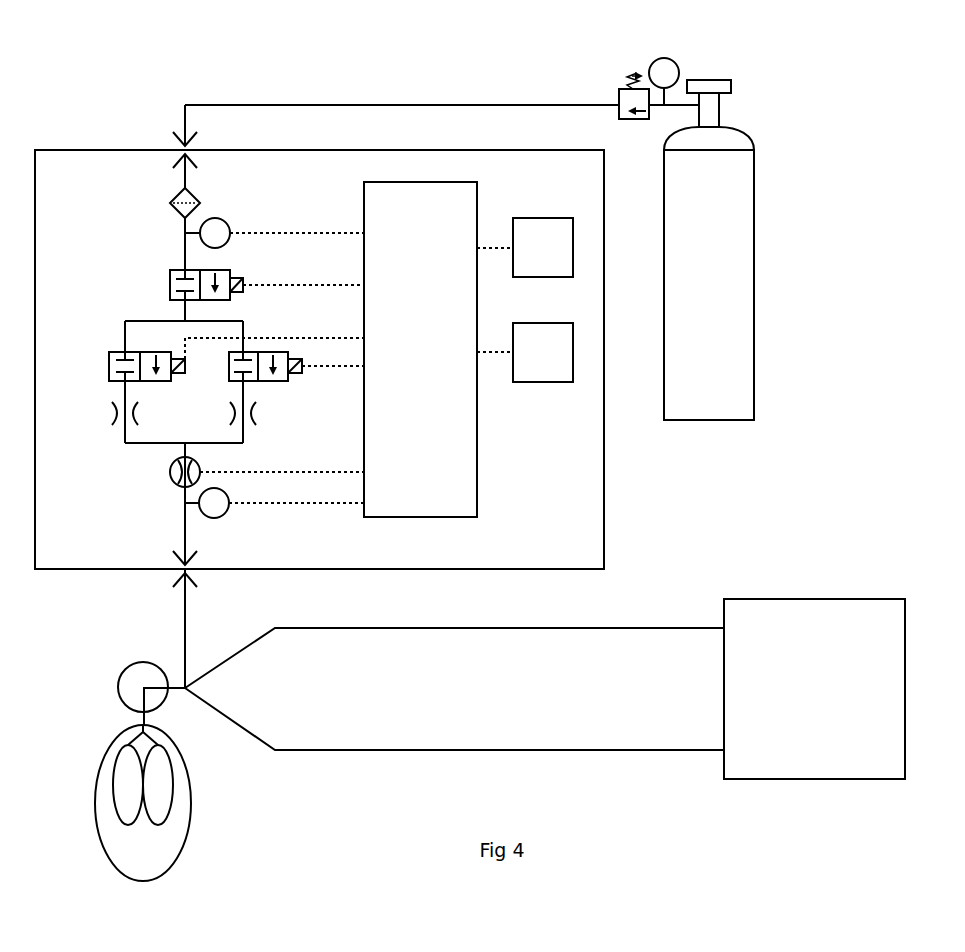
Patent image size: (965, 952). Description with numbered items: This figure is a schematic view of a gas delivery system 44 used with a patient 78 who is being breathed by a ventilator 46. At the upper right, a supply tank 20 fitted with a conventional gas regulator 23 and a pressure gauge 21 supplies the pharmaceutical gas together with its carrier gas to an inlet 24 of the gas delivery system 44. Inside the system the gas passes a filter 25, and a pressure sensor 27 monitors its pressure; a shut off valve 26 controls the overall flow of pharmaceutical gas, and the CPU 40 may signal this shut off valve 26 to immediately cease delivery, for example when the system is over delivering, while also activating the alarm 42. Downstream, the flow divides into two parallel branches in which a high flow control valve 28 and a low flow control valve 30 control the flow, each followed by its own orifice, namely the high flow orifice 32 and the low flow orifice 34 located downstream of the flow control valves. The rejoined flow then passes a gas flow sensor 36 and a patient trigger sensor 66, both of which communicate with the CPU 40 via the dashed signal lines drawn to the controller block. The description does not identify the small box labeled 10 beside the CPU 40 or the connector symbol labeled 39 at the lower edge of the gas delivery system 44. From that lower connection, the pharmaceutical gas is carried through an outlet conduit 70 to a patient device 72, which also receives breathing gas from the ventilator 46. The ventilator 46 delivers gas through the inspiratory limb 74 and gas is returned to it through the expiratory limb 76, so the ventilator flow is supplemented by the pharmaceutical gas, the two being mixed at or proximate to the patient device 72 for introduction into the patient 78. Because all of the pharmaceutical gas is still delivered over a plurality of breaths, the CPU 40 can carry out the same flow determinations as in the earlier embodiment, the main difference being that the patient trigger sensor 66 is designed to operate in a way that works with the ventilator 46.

The sensor 10 is at (530, 323).
The supply tank 20 is at (754, 197).
The pressure gauge 21 is at (678, 62).
The gas regulator 23 is at (619, 92).
The inlet 24 is at (182, 132).
The filter 25 is at (178, 192).
The shut off valve 26 is at (170, 280).
The pressure sensor 27 is at (220, 218).
The high flow control valve 28 is at (109, 352).
The low flow control valve 30 is at (288, 380).
The high flow orifice 32 is at (116, 413).
The low flow orifice 34 is at (256, 413).
The gas flow sensor 36 is at (170, 472).
The quick connector 39 is at (182, 580).
The CPU 40 is at (477, 511).
The alarm 42 is at (540, 218).
The gas delivery system 44 is at (604, 524).
The ventilator 46 is at (808, 599).
The patient trigger sensor 66 is at (228, 510).
The outlet conduit 70 is at (185, 624).
The patient device 72 is at (180, 690).
The inspiratory limb 74 is at (505, 632).
The expiratory limb 76 is at (497, 752).
The patient 78 is at (118, 695).